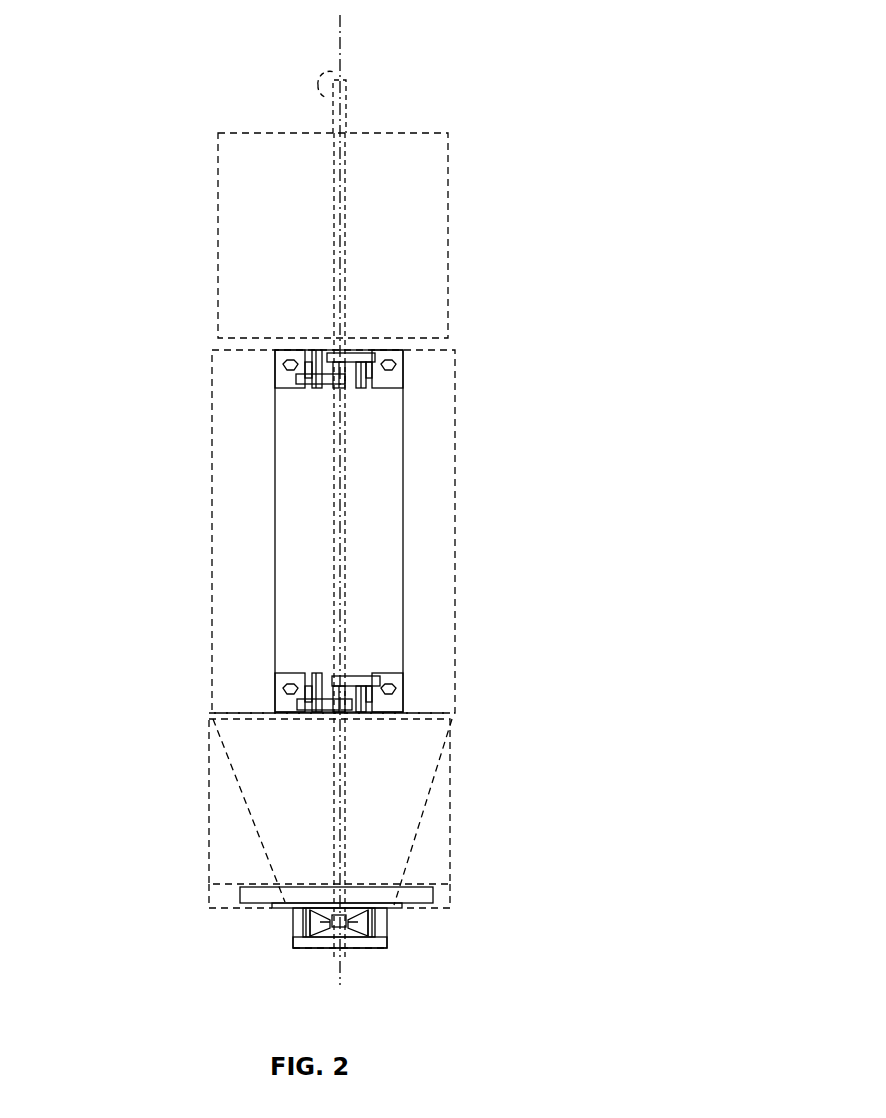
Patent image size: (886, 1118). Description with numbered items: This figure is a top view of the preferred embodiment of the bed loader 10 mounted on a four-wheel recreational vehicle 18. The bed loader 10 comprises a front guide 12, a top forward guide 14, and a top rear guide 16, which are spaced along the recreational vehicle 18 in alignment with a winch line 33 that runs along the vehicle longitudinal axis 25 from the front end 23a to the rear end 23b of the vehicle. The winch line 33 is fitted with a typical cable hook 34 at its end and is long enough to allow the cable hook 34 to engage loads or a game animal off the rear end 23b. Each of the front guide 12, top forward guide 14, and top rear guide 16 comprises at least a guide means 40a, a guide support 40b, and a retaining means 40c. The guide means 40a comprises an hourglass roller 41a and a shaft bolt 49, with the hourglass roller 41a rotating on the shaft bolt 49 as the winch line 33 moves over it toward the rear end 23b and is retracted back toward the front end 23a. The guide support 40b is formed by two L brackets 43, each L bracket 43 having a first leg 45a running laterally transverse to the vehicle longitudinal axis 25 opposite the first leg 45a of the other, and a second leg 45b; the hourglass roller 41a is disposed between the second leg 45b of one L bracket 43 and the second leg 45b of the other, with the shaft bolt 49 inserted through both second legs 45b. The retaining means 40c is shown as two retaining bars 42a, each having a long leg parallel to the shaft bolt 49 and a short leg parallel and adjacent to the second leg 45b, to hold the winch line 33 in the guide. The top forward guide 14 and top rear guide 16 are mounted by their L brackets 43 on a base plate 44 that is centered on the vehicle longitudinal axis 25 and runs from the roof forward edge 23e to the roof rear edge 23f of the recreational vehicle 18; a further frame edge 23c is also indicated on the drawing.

The bed loader 10 is at (670, 378).
The front guide 12 is at (408, 938).
The top forward guide 14 is at (416, 684).
The top rear guide 16 is at (407, 633).
The four-wheel recreational vehicle 18 is at (155, 326).
The front end 23a is at (216, 903).
The rear end 23b is at (372, 133).
The frame member 23c is at (446, 712).
The roof forward edge 23e is at (262, 718).
The roof rear edge 23f is at (228, 348).
The vehicle longitudinal axis 25 is at (341, 34).
The winch line 33 is at (335, 506).
The cable hook 34 is at (322, 82).
The guide means 40a is at (168, 978).
The guide support 40b is at (600, 268).
The retaining means 40c is at (497, 732).
The hourglass roller 41a is at (282, 372).
The retaining bar 42a is at (355, 388).
The L bracket 43 is at (555, 374).
The base plate 44 is at (300, 458).
The first leg 45a is at (297, 352).
The second leg 45b is at (318, 362).
The shaft bolt 49 is at (326, 930).